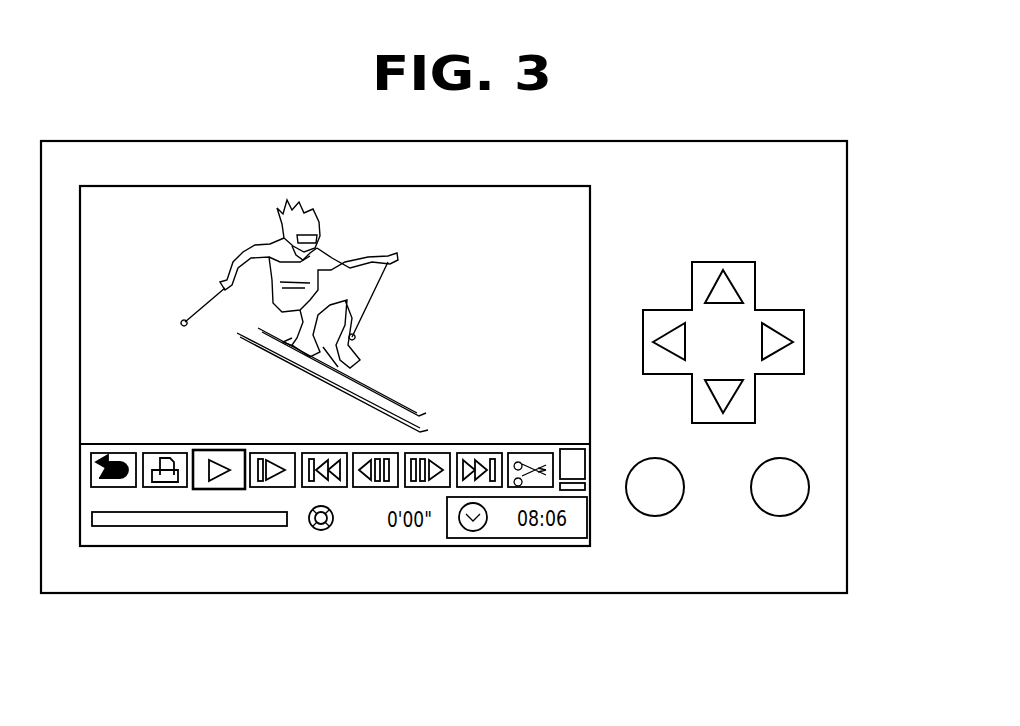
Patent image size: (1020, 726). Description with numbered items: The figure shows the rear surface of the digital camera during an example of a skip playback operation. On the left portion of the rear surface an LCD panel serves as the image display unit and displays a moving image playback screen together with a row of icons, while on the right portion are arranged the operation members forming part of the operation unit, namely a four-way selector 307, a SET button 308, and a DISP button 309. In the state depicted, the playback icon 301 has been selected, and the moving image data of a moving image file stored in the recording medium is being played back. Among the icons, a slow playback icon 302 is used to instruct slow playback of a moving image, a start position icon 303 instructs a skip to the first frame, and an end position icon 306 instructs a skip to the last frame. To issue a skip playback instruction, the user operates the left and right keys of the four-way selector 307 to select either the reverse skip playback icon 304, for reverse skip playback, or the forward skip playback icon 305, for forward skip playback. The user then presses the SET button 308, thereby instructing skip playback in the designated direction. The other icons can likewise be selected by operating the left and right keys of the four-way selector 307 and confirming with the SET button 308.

The playback icon 301 is at (215, 489).
The slow playback icon 302 is at (271, 489).
The start position icon 303 is at (318, 489).
The reverse skip playback icon 304 is at (367, 489).
The forward skip playback icon 305 is at (441, 489).
The end position icon 306 is at (490, 489).
The four-way selector 307 is at (742, 317).
The SET button 308 is at (807, 470).
The DISP button 309 is at (680, 472).